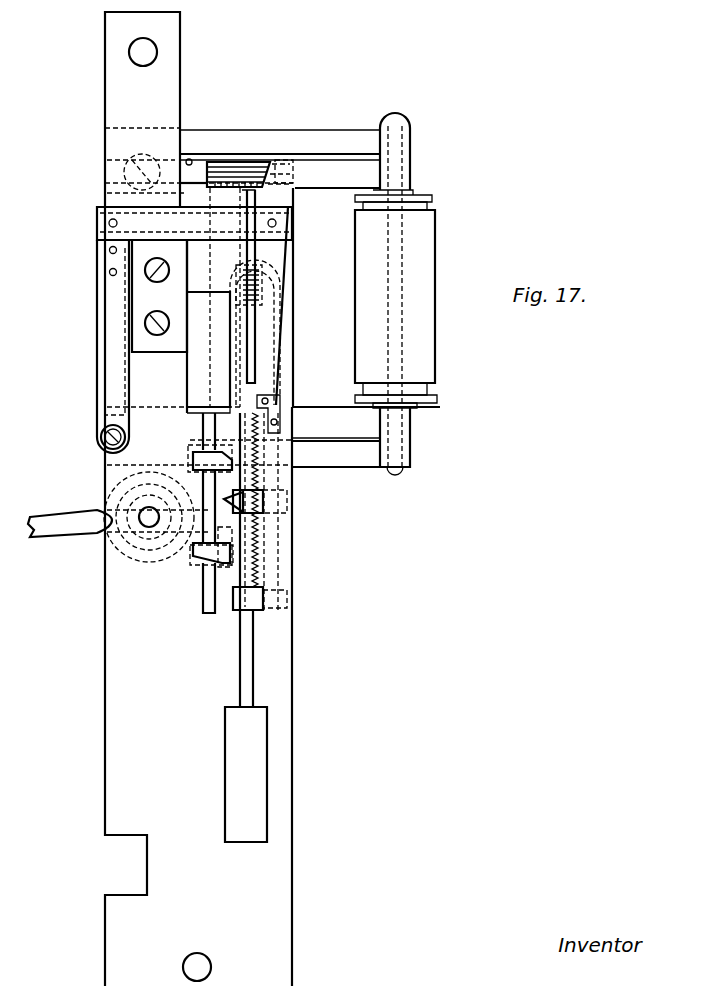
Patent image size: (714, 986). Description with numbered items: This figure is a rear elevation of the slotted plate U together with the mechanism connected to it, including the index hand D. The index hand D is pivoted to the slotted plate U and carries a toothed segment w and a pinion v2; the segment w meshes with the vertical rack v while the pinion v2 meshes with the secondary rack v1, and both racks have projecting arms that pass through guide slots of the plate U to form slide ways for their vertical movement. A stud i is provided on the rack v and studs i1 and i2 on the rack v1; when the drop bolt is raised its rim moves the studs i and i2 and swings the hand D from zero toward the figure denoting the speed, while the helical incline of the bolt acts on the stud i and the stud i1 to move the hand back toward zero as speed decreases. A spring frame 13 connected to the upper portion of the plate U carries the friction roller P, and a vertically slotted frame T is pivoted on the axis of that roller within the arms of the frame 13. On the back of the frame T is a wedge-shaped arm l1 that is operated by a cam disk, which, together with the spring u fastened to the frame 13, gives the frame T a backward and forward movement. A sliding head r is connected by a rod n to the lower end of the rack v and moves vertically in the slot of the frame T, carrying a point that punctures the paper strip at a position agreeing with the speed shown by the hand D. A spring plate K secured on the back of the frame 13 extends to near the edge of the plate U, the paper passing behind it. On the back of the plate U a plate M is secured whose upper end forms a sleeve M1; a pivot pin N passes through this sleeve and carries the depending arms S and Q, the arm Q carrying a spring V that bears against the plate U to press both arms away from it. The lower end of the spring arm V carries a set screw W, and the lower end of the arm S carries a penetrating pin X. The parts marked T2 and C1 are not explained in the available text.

The slotted plate U is at (198, 499).
The spring frame 13 is at (336, 142).
The vertically slotted frame T is at (272, 300).
The friction roller P is at (396, 299).
The sleeve M1 is at (148, 208).
The pivot pin N is at (145, 218).
The spring V is at (108, 334).
The depending arm Q is at (100, 389).
The set screw W is at (100, 437).
The plate M is at (159, 296).
The spring plate K is at (208, 345).
The guide T2 is at (215, 297).
The wedge-shaped arm l1 is at (238, 180).
The spring u is at (190, 158).
The sliding head r is at (240, 285).
The rod n is at (283, 288).
The depending arm S is at (284, 352).
The penetrating pin X is at (262, 398).
The stud i1 is at (217, 457).
The secondary rack v1 is at (190, 477).
The pinion v2 is at (190, 556).
The stud i2 is at (217, 565).
The toothed segment w is at (230, 582).
The stud i is at (243, 500).
The vertical rack v is at (262, 548).
The index hand D is at (50, 518).
The cam C1 is at (148, 518).